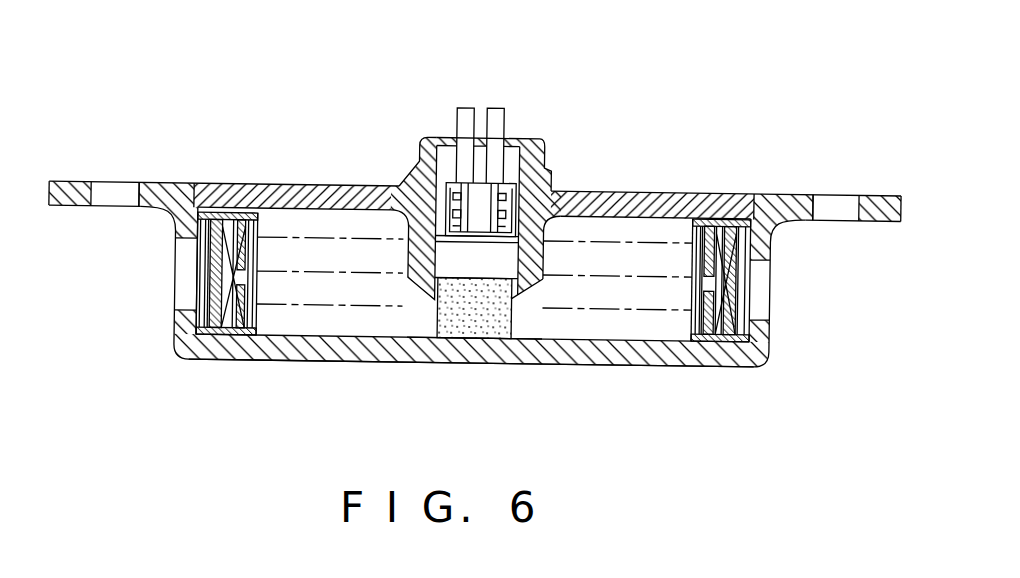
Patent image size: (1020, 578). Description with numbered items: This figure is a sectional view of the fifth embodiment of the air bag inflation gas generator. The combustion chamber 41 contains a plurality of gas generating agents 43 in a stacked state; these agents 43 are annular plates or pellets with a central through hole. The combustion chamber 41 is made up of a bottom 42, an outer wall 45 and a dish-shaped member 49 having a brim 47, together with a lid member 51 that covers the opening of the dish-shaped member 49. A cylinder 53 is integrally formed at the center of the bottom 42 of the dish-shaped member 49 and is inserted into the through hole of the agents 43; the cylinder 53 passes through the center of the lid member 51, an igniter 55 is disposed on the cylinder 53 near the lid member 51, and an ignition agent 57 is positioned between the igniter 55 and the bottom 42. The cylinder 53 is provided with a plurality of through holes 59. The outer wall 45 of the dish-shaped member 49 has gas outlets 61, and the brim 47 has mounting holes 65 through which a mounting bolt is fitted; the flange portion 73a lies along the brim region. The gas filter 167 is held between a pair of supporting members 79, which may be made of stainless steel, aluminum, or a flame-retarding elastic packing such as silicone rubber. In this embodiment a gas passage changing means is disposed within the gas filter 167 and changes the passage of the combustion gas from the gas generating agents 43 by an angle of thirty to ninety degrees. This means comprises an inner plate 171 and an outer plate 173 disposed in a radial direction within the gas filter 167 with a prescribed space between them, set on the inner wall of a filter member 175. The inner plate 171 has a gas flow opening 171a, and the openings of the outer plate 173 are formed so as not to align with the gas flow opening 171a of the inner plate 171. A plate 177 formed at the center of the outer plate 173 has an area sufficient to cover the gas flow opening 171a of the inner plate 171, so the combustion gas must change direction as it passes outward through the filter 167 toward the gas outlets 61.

The combustion chamber 41 is at (282, 220).
The bottom 42 is at (599, 363).
The gas generating agents 43 is at (586, 231).
The outer wall 45 is at (763, 326).
The brim 47 is at (877, 191).
The dish-shaped member 49 is at (556, 372).
The lid member 51 is at (651, 194).
The cylinder 53 is at (413, 258).
The igniter 55 is at (510, 160).
The ignition agent 57 is at (467, 320).
The through holes 59 is at (425, 318).
The gas outlets 61 is at (185, 254).
The mounting holes 65 is at (133, 187).
The cover flange portion 73a is at (752, 191).
The supporting members 79 is at (772, 278).
The gas filter 167 is at (187, 317).
The inner plate 171 is at (241, 333).
The gas flow opening 171a is at (721, 307).
The outer plate 173 is at (216, 333).
The filter member 175 is at (205, 187).
The plate 177 is at (745, 281).